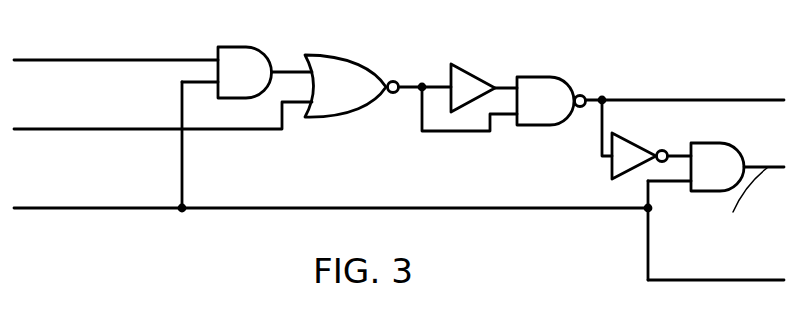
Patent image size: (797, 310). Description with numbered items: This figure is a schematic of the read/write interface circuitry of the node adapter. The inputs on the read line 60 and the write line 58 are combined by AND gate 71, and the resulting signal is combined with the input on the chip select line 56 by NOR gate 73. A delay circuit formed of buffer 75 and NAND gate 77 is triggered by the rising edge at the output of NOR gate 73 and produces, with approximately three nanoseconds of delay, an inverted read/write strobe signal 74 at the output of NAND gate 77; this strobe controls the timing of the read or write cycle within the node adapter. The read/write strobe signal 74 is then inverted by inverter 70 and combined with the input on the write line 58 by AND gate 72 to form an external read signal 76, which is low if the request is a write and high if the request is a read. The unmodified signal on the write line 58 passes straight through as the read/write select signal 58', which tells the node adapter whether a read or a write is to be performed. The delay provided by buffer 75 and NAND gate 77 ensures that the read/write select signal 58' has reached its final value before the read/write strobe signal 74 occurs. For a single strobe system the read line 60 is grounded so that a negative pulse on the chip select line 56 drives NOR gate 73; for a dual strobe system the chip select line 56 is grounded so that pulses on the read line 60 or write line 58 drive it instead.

The read line 60 is at (143, 60).
The chip select line 56 is at (90, 129).
The write line 58 is at (332, 162).
The AND gate 71 is at (243, 52).
The NOR gate 73 is at (348, 65).
The buffer 75 is at (473, 78).
The NAND gate 77 is at (552, 78).
The read/write strobe signal 74 is at (705, 100).
The inverter 70 is at (632, 143).
The external read signal 76 is at (775, 167).
The AND gate 72 is at (702, 188).
The read/write select signal 58' is at (684, 285).